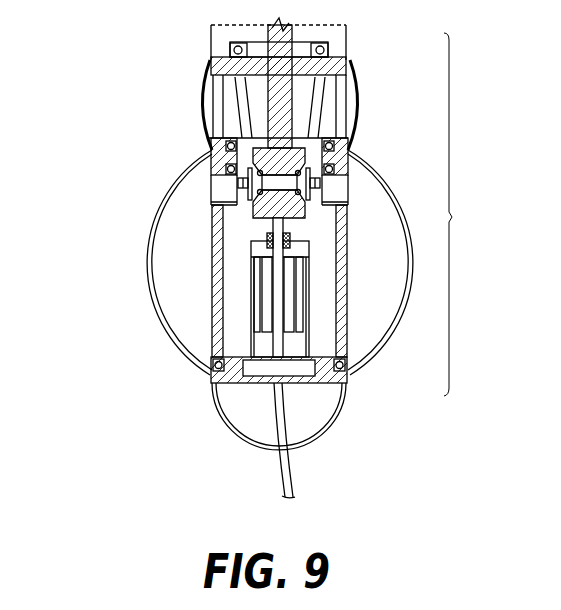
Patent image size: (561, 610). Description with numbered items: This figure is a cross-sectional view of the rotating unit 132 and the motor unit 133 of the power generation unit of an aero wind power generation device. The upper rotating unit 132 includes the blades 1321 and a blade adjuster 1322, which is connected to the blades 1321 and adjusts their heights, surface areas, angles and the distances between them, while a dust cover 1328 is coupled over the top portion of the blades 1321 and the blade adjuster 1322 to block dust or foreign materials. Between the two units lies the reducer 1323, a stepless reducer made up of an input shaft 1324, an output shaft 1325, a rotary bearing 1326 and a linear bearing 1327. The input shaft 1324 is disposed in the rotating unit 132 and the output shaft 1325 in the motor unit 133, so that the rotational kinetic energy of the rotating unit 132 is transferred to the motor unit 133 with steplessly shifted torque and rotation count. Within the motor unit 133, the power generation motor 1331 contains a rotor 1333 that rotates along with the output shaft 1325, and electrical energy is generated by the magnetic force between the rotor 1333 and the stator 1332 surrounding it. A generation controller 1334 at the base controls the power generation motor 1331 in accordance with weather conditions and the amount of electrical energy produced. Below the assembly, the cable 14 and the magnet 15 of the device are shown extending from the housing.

The cable 14 is at (293, 485).
The magnet 15 is at (243, 448).
The rotating unit 132 is at (140, 98).
The motor unit 133 is at (110, 296).
The blades 1321 is at (160, 207).
The blade adjuster 1322 is at (208, 86).
The reducer 1323 is at (468, 214).
The input shaft 1324 is at (293, 103).
The output shaft 1325 is at (306, 212).
The rotary bearing 1326 is at (330, 49).
The linear bearing 1327 is at (348, 160).
The dust cover 1328 is at (200, 117).
The power generation motor 1331 is at (251, 248).
The stator 1332 is at (254, 330).
The rotor 1333 is at (266, 262).
The generation controller 1334 is at (308, 377).